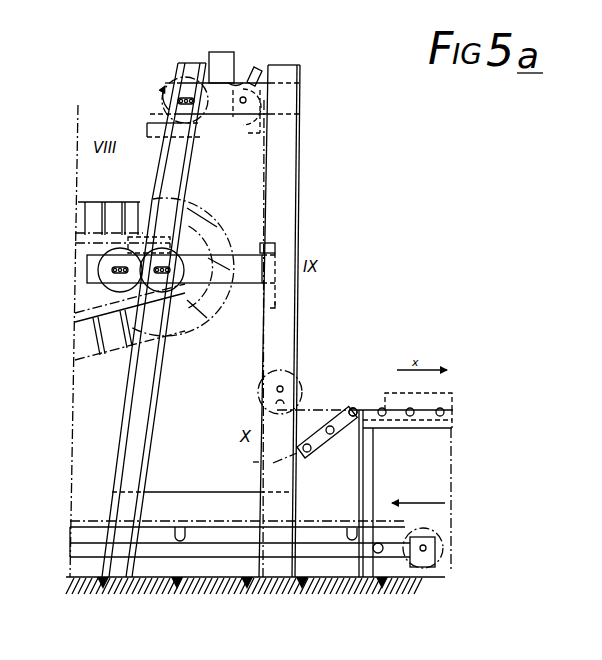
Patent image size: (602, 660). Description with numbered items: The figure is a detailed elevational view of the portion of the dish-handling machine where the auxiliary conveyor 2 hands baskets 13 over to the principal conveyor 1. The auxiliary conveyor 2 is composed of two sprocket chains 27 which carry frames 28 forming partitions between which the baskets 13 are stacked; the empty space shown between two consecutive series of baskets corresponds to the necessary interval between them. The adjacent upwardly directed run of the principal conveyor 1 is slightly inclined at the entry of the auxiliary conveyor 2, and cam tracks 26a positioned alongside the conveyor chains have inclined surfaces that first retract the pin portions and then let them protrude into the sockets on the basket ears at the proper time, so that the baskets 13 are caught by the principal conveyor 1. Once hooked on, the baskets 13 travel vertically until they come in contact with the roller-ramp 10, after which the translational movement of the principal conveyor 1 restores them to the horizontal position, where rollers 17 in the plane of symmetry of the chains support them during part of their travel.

The principal conveyor 1 is at (95, 290).
The auxiliary conveyor 2 is at (130, 322).
The roller-ramp 10 is at (305, 435).
The basket 13 is at (275, 300).
The rollers 17 is at (383, 416).
The cam tracks 26a is at (148, 153).
The sprocket chains 27 is at (318, 321).
The frames 28 is at (87, 207).